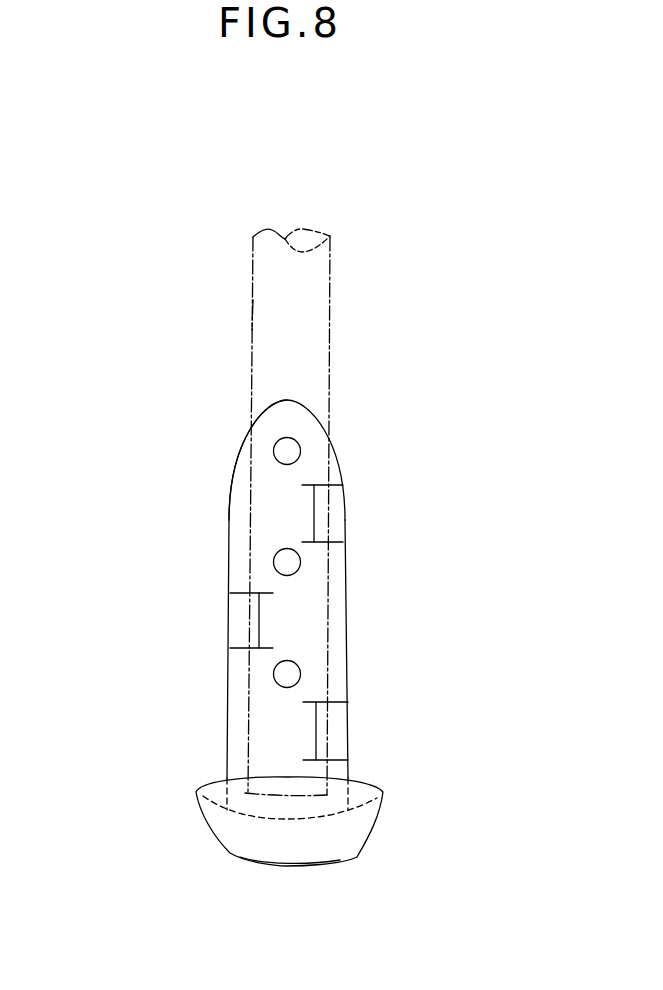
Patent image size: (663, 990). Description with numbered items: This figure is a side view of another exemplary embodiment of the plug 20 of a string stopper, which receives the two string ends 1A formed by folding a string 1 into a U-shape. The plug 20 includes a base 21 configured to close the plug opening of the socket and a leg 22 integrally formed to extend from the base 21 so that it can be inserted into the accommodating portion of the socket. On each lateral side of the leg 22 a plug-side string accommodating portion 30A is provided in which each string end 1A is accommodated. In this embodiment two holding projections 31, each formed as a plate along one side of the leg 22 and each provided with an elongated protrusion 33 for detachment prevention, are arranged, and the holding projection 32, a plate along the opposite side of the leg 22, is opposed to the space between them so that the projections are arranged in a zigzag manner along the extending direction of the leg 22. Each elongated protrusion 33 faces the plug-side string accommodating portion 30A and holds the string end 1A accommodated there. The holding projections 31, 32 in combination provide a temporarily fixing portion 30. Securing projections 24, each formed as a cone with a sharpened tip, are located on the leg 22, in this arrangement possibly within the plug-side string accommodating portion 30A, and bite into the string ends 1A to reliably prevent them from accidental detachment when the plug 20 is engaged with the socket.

The string 1 is at (305, 198).
The string end 1A is at (252, 309).
The plug 20 is at (260, 851).
The base 21 is at (282, 864).
The leg 22 is at (300, 415).
The securing projection 24 is at (273, 451).
The temporarily fixing portion 30 is at (252, 605).
The plug-side string accommodating portion 30A is at (307, 618).
The holding projection 31 is at (342, 525).
The holding projection 32 is at (238, 632).
The elongated protrusion 33 is at (320, 504).